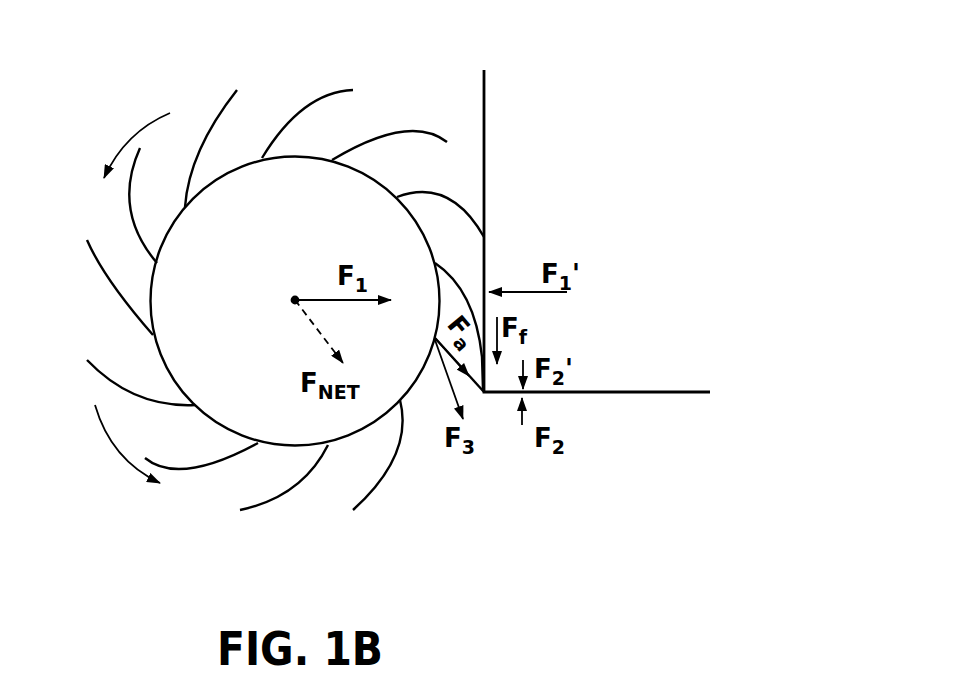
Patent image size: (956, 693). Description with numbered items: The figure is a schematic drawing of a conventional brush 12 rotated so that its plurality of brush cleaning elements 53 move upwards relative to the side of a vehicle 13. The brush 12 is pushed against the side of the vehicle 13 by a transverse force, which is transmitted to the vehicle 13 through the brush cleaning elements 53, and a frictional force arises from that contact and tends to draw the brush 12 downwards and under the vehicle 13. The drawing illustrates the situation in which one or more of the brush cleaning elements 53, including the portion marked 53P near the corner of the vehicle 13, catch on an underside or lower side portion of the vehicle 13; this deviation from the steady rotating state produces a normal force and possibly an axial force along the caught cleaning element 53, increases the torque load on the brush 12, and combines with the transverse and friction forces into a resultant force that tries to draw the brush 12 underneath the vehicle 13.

The brush 12 is at (252, 532).
The vehicle 13 is at (598, 176).
The brush cleaning elements 53 is at (213, 110).
The blade tip portion 53P is at (452, 194).